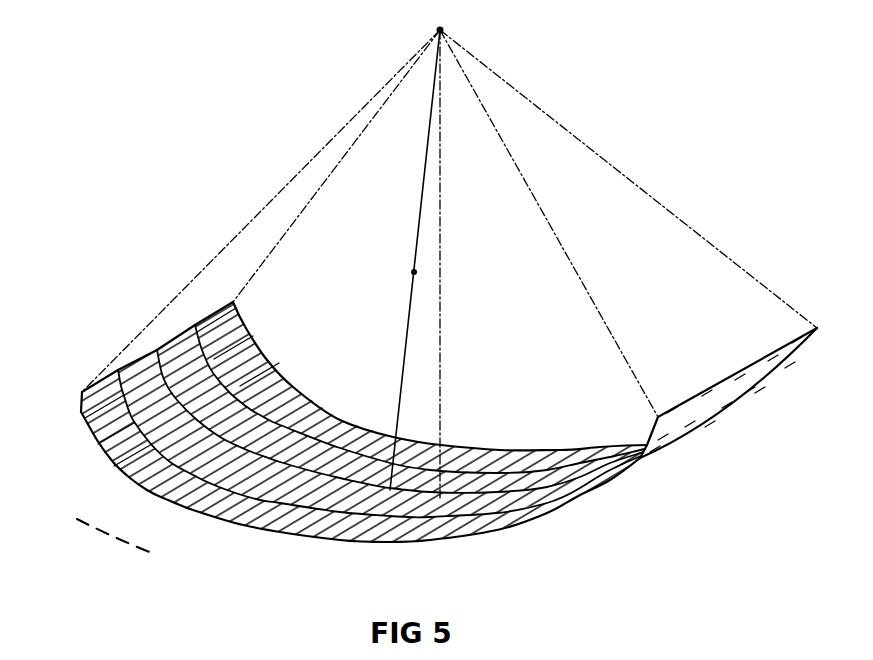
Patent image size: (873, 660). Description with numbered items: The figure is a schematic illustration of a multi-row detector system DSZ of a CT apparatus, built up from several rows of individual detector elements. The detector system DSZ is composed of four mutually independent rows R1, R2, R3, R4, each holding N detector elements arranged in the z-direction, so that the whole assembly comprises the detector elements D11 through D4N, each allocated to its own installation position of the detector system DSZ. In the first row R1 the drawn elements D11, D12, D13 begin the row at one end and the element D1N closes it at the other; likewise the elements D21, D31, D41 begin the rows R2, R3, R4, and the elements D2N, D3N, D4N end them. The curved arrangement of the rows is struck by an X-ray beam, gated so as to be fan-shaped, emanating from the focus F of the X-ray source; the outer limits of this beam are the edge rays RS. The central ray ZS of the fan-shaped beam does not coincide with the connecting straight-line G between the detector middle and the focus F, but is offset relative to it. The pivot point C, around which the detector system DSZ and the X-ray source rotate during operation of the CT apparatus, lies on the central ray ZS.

The focus F is at (444, 27).
The connecting straight-line G is at (443, 286).
The central ray ZS is at (422, 173).
The pivot point C is at (414, 272).
The edge rays RS is at (302, 212).
The first detector row R1 is at (100, 378).
The second detector row R2 is at (135, 357).
The third detector row R3 is at (170, 337).
The fourth detector row R4 is at (207, 315).
The detector element D11 is at (97, 410).
The detector element D12 is at (80, 414).
The detector element D13 is at (97, 442).
The detector element D21 is at (266, 367).
The detector element D31 is at (239, 338).
The detector element D41 is at (222, 317).
The detector element D1N is at (657, 422).
The detector element D2N is at (695, 395).
The detector element D3N is at (737, 375).
The detector element D4N is at (782, 352).
The detector system DSZ is at (720, 418).